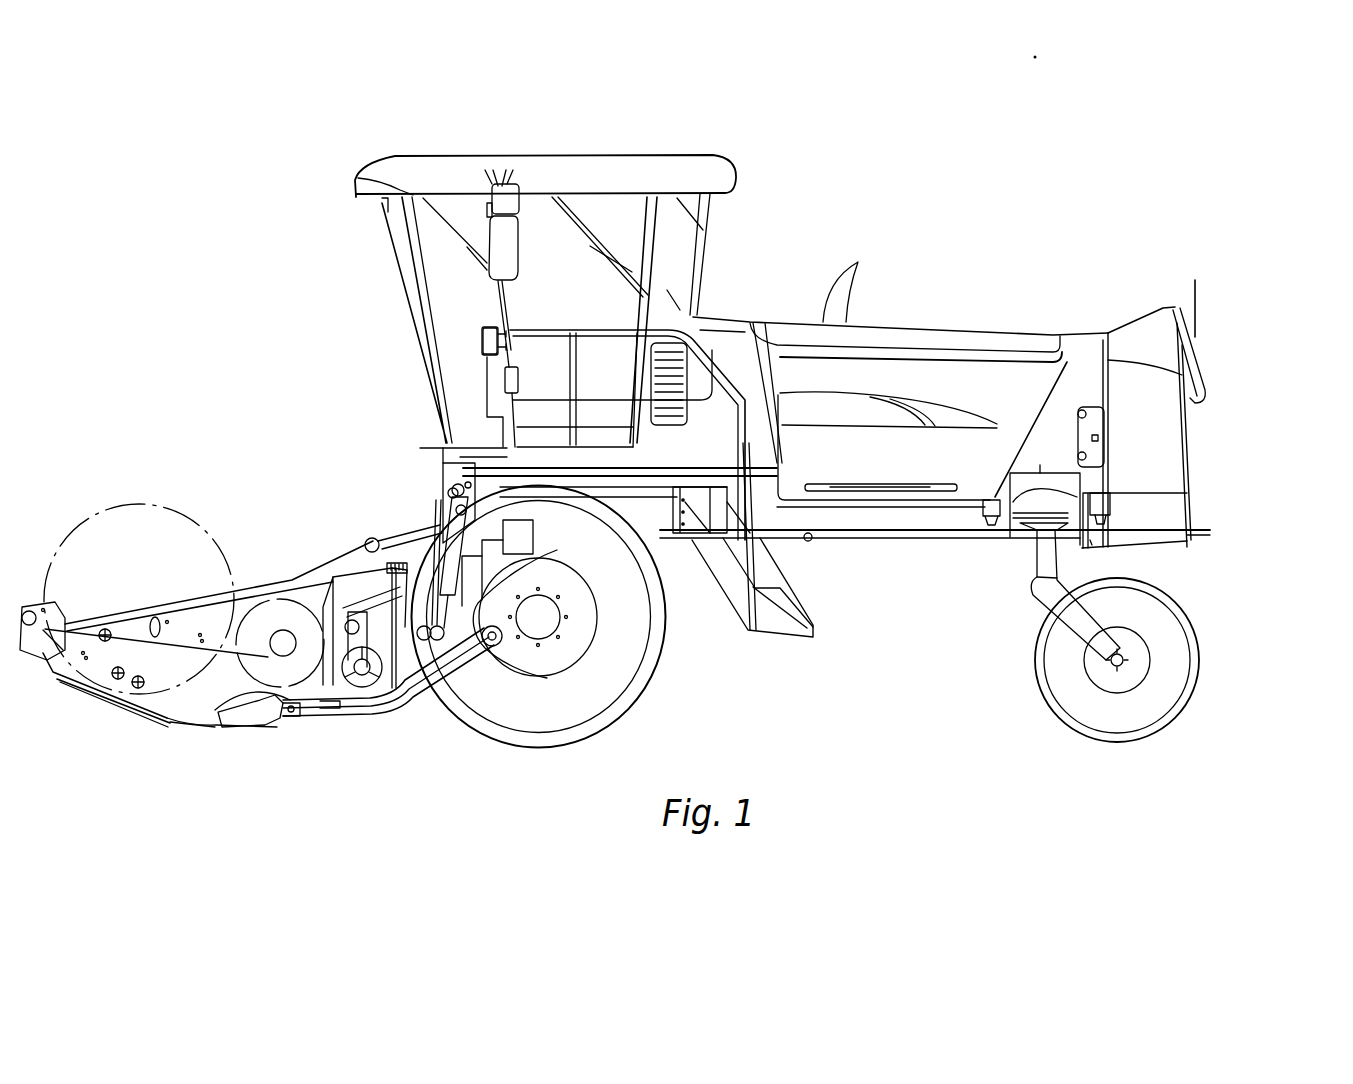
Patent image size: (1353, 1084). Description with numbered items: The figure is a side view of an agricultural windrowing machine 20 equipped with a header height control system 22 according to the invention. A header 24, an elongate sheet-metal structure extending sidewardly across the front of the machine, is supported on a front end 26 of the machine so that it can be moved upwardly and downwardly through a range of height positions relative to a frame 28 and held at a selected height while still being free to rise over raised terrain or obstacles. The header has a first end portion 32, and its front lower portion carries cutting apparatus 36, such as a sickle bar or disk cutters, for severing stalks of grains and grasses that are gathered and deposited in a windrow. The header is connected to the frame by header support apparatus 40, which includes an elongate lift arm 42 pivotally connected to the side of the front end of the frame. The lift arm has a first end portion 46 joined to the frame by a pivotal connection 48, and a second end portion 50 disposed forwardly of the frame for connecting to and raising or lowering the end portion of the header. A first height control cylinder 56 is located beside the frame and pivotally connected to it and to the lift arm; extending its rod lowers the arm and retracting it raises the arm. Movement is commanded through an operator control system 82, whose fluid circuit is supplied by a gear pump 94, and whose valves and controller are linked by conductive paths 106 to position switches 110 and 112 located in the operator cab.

The agricultural windrowing machine 20 is at (1259, 253).
The header height control system 22 is at (590, 573).
The header 24 is at (257, 590).
The front end 26 is at (447, 481).
The frame 28 is at (898, 537).
The first end portion 32 is at (155, 700).
The cutting apparatus 36 is at (217, 727).
The header support apparatus 40 is at (463, 677).
The lift arm 42 is at (382, 713).
The first end portion 46 is at (513, 655).
The pivotal connection 48 is at (530, 623).
The second end portion 50 is at (289, 710).
The first height control cylinder 56 is at (557, 550).
The operator control system 82 is at (495, 518).
The gear pump 94 is at (670, 156).
The conductive path 106 is at (487, 360).
The position switch 110 is at (478, 329).
The position switch 112 is at (490, 341).